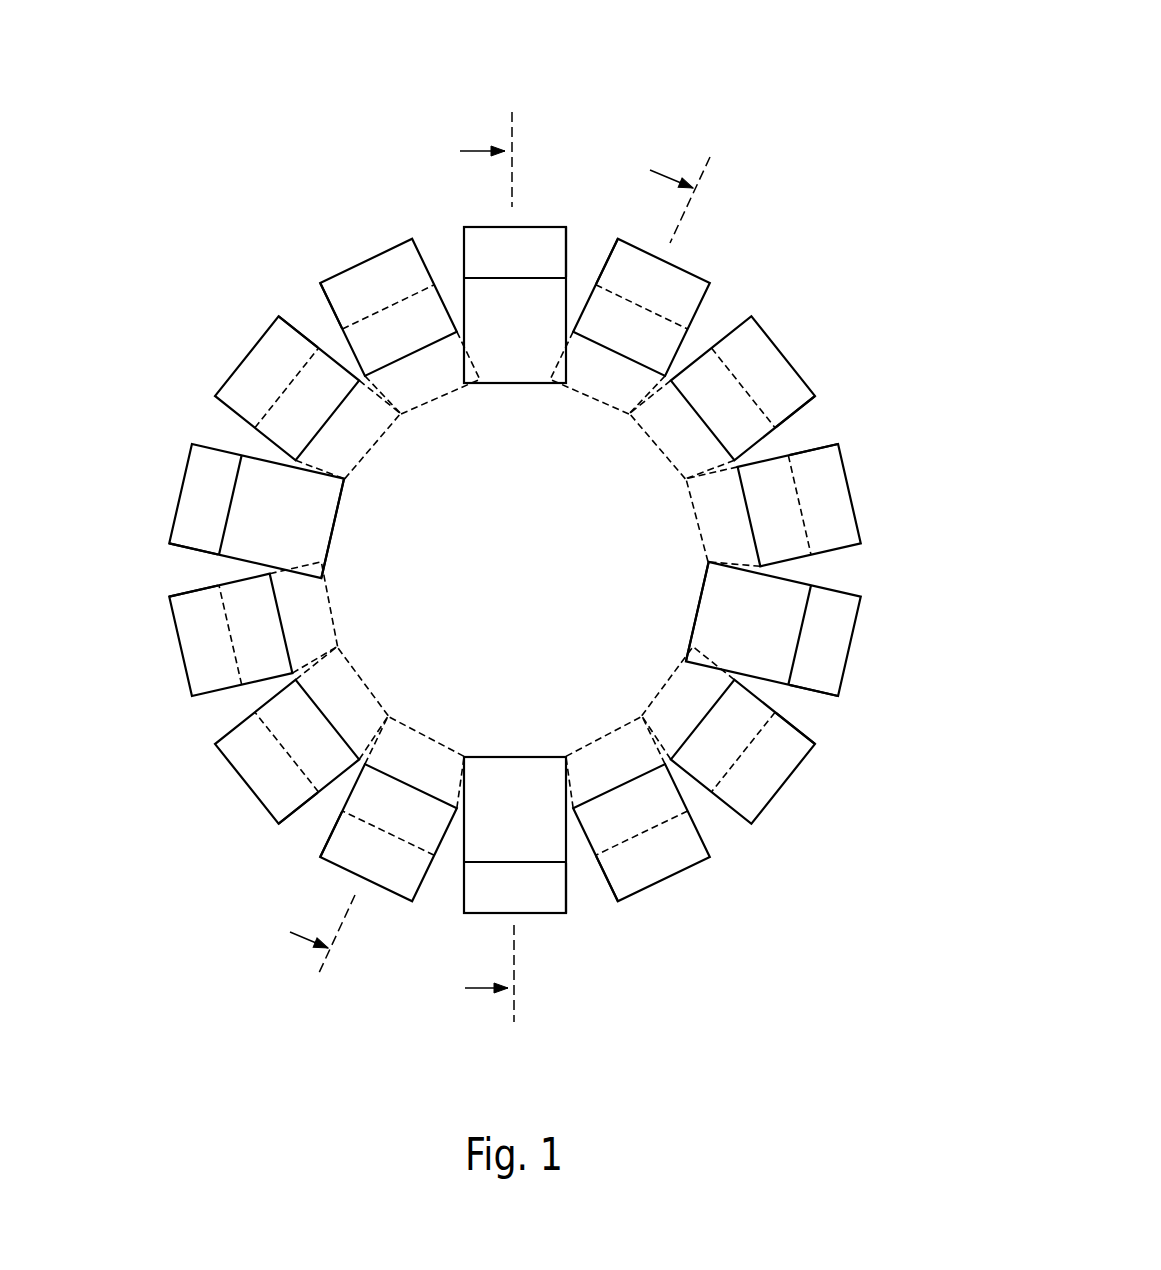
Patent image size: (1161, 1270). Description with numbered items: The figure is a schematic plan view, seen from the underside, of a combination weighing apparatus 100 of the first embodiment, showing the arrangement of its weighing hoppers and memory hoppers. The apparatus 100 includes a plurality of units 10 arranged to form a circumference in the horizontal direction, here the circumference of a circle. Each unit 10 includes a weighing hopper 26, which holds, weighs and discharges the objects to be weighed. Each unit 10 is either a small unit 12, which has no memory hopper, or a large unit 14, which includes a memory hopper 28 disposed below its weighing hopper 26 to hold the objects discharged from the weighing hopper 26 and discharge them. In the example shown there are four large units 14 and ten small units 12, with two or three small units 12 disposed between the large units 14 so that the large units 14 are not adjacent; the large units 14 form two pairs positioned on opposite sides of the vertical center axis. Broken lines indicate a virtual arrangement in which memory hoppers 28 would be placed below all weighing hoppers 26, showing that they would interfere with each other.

The combination weighing apparatus 100 is at (777, 55).
The unit 10 is at (813, 946).
The small unit 12 is at (355, 250).
The large unit 14 is at (543, 214).
The weighing hopper 26 is at (607, 260).
The memory hopper 28 is at (487, 384).